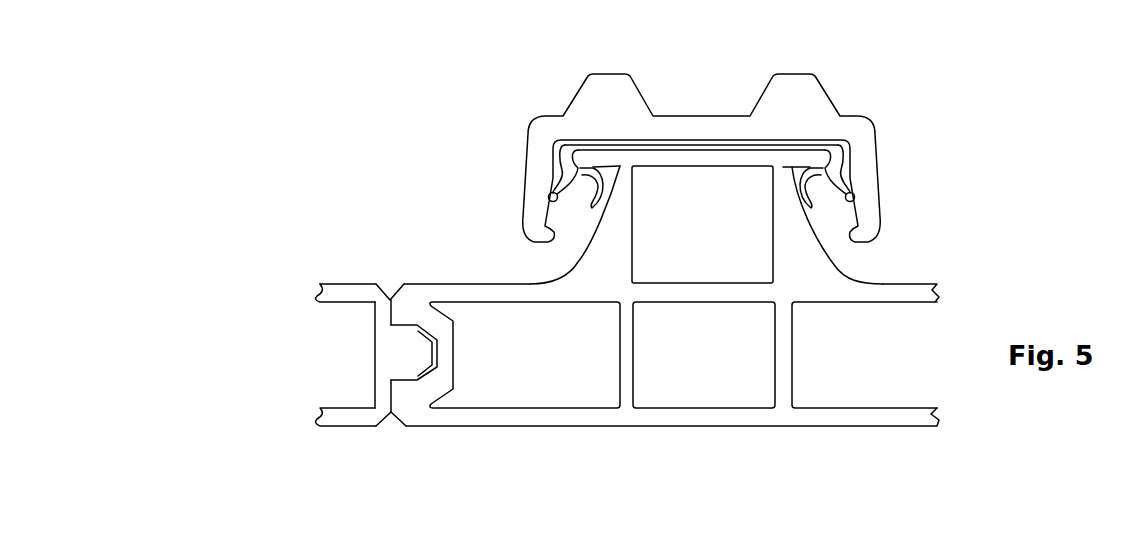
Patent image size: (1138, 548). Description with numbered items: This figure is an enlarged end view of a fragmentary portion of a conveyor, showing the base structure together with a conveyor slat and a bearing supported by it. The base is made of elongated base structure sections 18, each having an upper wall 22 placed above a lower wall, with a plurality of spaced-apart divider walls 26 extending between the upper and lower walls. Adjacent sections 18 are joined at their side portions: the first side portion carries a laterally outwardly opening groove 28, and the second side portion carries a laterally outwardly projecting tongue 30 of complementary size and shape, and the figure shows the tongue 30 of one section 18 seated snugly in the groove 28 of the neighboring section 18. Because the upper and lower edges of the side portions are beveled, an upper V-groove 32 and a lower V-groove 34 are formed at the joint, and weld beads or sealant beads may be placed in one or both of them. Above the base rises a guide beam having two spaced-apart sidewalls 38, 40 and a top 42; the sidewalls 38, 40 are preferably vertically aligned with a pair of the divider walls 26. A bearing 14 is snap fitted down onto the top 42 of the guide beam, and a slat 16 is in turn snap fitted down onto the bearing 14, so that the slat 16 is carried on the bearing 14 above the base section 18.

The bearing 14 is at (697, 146).
The slat 16 is at (588, 101).
The base structure section 18 is at (326, 395).
The upper wall 22 is at (342, 286).
The divider wall 26 is at (635, 372).
The groove 28 is at (407, 331).
The tongue 30 is at (407, 357).
The upper V-groove 32 is at (391, 286).
The lower V-groove 34 is at (393, 427).
The guide beam sidewall 38 is at (600, 253).
The guide beam sidewall 40 is at (800, 252).
The guide beam top 42 is at (715, 160).